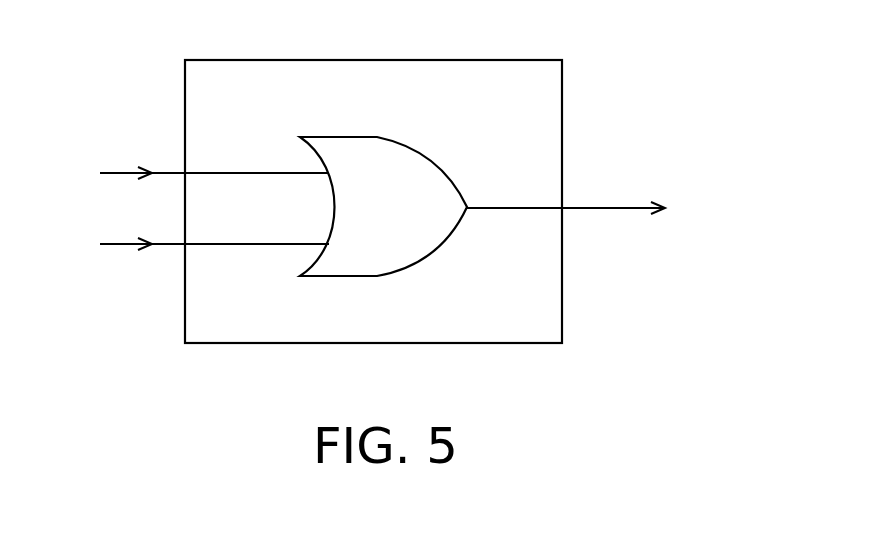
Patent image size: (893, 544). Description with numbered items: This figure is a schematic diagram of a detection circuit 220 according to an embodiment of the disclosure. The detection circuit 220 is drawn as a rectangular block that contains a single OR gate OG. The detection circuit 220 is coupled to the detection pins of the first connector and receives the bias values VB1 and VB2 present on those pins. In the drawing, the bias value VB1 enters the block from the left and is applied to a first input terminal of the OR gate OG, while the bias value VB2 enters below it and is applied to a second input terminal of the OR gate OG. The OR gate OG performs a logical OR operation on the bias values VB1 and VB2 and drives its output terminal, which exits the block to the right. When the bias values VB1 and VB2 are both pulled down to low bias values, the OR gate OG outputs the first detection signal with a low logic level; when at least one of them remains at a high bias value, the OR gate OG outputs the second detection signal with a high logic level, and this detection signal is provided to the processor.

The detection circuit 220 is at (562, 94).
The OR gate OG is at (438, 165).
The bias value VB1 is at (186, 174).
The bias value VB2 is at (187, 246).